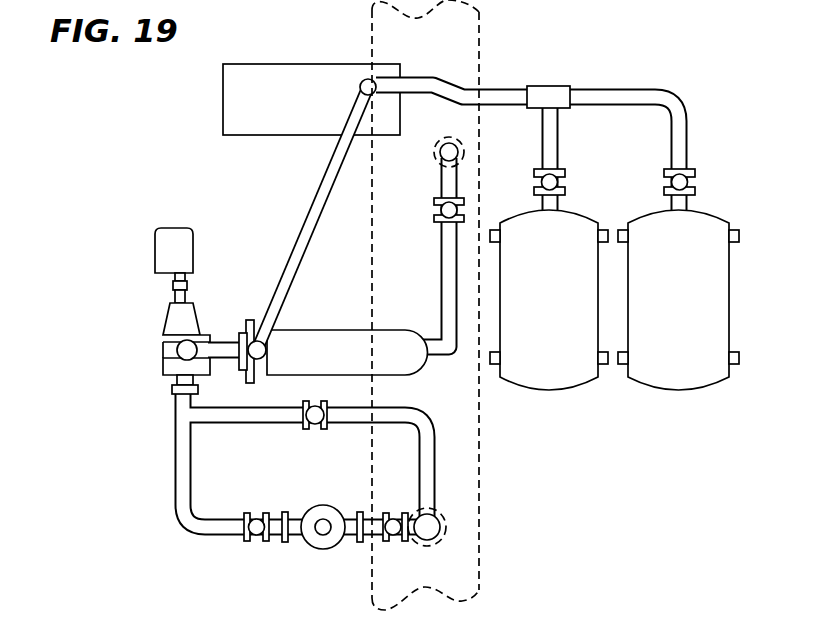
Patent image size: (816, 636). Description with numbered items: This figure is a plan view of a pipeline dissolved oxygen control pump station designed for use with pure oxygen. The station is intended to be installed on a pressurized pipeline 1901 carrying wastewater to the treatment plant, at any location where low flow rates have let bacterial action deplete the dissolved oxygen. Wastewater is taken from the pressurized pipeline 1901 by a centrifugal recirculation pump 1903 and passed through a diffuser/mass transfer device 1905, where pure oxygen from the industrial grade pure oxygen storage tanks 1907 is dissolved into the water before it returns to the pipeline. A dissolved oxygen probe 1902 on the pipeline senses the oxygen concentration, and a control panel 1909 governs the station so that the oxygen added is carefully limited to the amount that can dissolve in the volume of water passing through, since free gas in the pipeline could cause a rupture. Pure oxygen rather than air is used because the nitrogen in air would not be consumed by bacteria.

The pressurized pipeline 1901 is at (485, 505).
The dissolved oxygen probe 1902 is at (313, 559).
The centrifugal recirculation pump 1903 is at (162, 360).
The diffuser/mass transfer device 1905 is at (358, 361).
The industrial grade pure oxygen storage tanks 1907 is at (574, 304).
The control panel 1909 is at (296, 109).